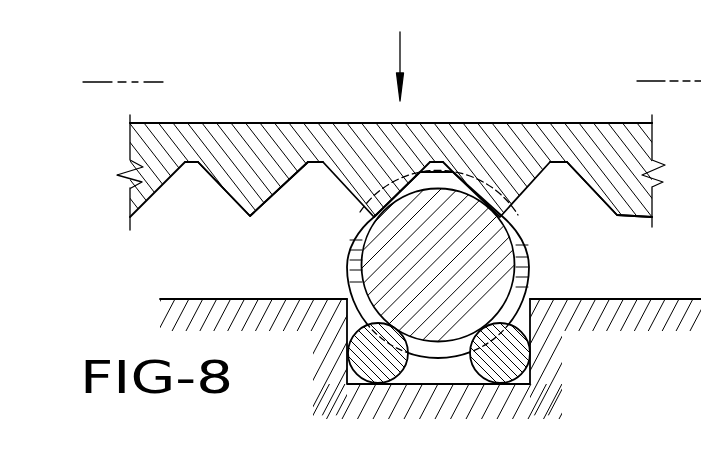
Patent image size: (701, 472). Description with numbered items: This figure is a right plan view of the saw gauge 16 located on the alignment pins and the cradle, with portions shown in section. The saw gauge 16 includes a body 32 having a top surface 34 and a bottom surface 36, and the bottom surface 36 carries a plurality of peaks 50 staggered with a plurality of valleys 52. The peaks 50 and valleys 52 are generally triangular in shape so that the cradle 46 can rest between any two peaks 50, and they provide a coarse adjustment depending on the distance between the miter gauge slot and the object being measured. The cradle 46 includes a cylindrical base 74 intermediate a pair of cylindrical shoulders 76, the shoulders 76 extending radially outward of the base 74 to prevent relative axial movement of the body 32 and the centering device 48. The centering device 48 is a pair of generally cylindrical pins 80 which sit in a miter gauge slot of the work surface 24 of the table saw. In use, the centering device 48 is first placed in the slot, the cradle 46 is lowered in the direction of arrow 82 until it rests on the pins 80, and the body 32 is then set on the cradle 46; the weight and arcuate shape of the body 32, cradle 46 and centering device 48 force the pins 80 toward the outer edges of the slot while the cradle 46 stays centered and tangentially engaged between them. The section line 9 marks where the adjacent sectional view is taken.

The section line 9- 9 is at (83, 82).
The saw gauge 16 is at (501, 103).
The work surface 24 is at (208, 298).
The body 32 is at (199, 108).
The top surface 34 is at (237, 123).
The bottom surface 36 is at (641, 234).
The cradle 46 is at (548, 233).
The centering device 48 is at (550, 348).
The peaks 50 is at (249, 218).
The valleys 52 is at (315, 161).
The base 74 is at (395, 246).
The shoulders 76 is at (526, 267).
The pins 80 is at (510, 363).
The arrow 82 is at (400, 56).